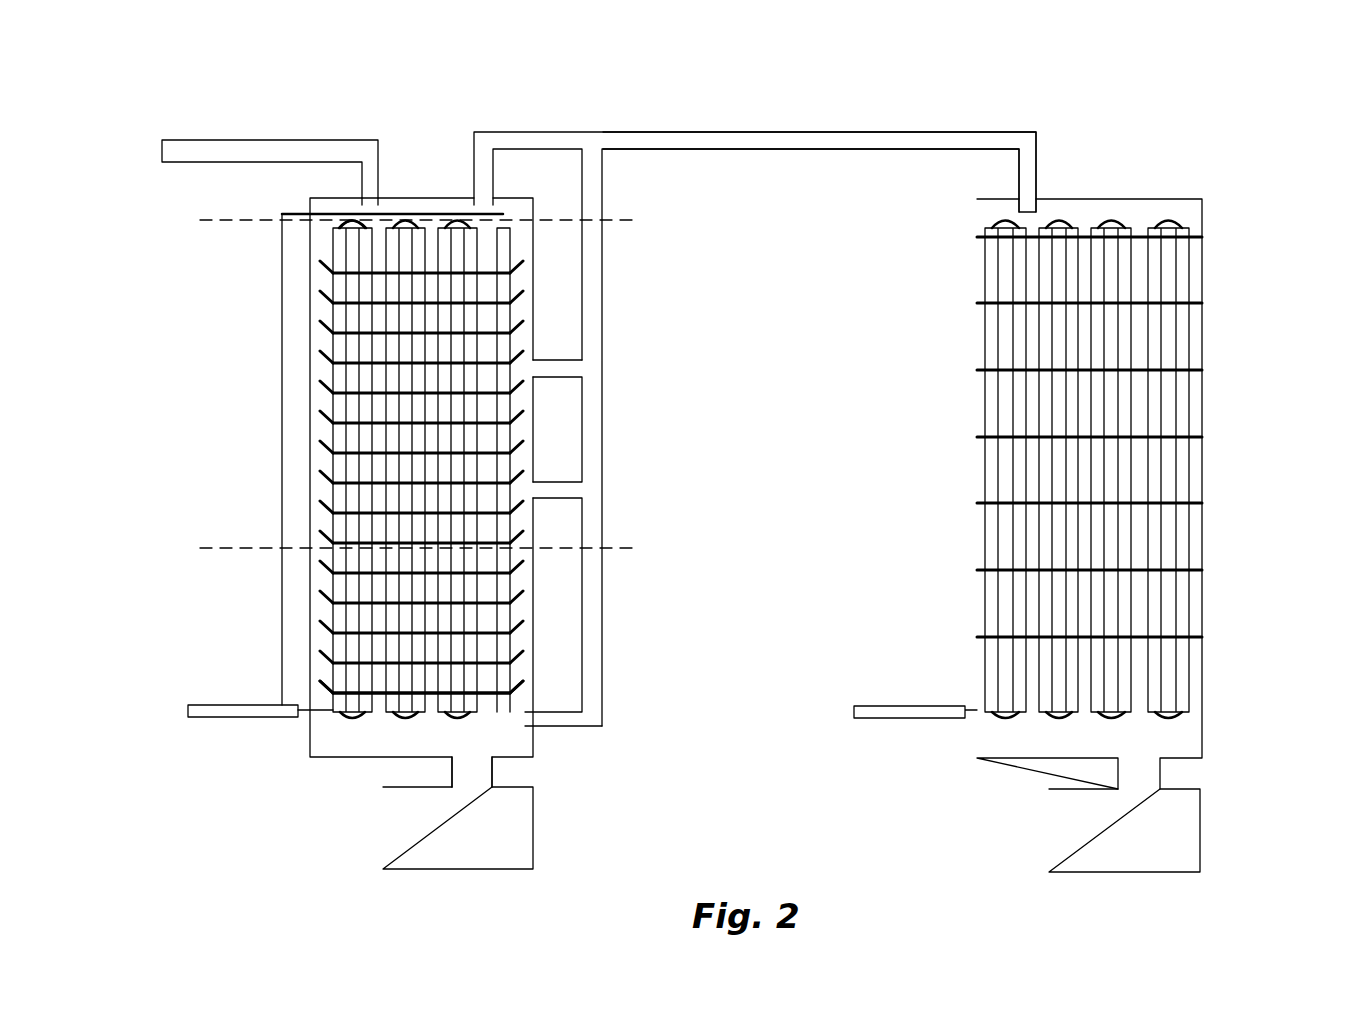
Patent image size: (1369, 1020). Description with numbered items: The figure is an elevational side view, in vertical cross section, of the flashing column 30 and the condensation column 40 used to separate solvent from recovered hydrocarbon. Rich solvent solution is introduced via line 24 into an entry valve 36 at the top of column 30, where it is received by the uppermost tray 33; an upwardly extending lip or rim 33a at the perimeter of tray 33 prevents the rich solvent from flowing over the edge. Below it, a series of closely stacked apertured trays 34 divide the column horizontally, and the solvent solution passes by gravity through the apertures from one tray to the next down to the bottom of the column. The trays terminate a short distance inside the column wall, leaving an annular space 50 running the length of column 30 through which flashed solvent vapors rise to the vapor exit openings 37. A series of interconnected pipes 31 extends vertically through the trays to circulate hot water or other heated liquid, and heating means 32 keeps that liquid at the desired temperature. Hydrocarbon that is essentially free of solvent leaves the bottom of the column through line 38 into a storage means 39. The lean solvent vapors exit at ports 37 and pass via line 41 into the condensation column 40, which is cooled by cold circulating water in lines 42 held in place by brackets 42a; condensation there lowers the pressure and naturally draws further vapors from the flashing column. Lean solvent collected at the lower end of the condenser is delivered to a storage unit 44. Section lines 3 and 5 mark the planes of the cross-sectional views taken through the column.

The line 24 is at (240, 146).
The entry valve 36 is at (398, 182).
The vapor exit opening 37 is at (466, 205).
The upwardly extending lip or rim 33a is at (325, 263).
The section line 5- 5 is at (413, 222).
The uppermost tray 33 is at (375, 270).
The trays 34 is at (400, 573).
The flashing column 30 is at (368, 520).
The interconnected pipes 31 is at (333, 497).
The section line 3- 3 is at (412, 549).
The annular space 50 is at (321, 667).
The heating means 32 is at (187, 712).
The line 38 is at (432, 768).
The storage means 39 is at (458, 828).
The line 41 is at (830, 150).
The condensation column 40 is at (1079, 535).
The brackets 42a is at (1173, 507).
The lines 42 is at (862, 706).
The storage unit 44 is at (1124, 830).